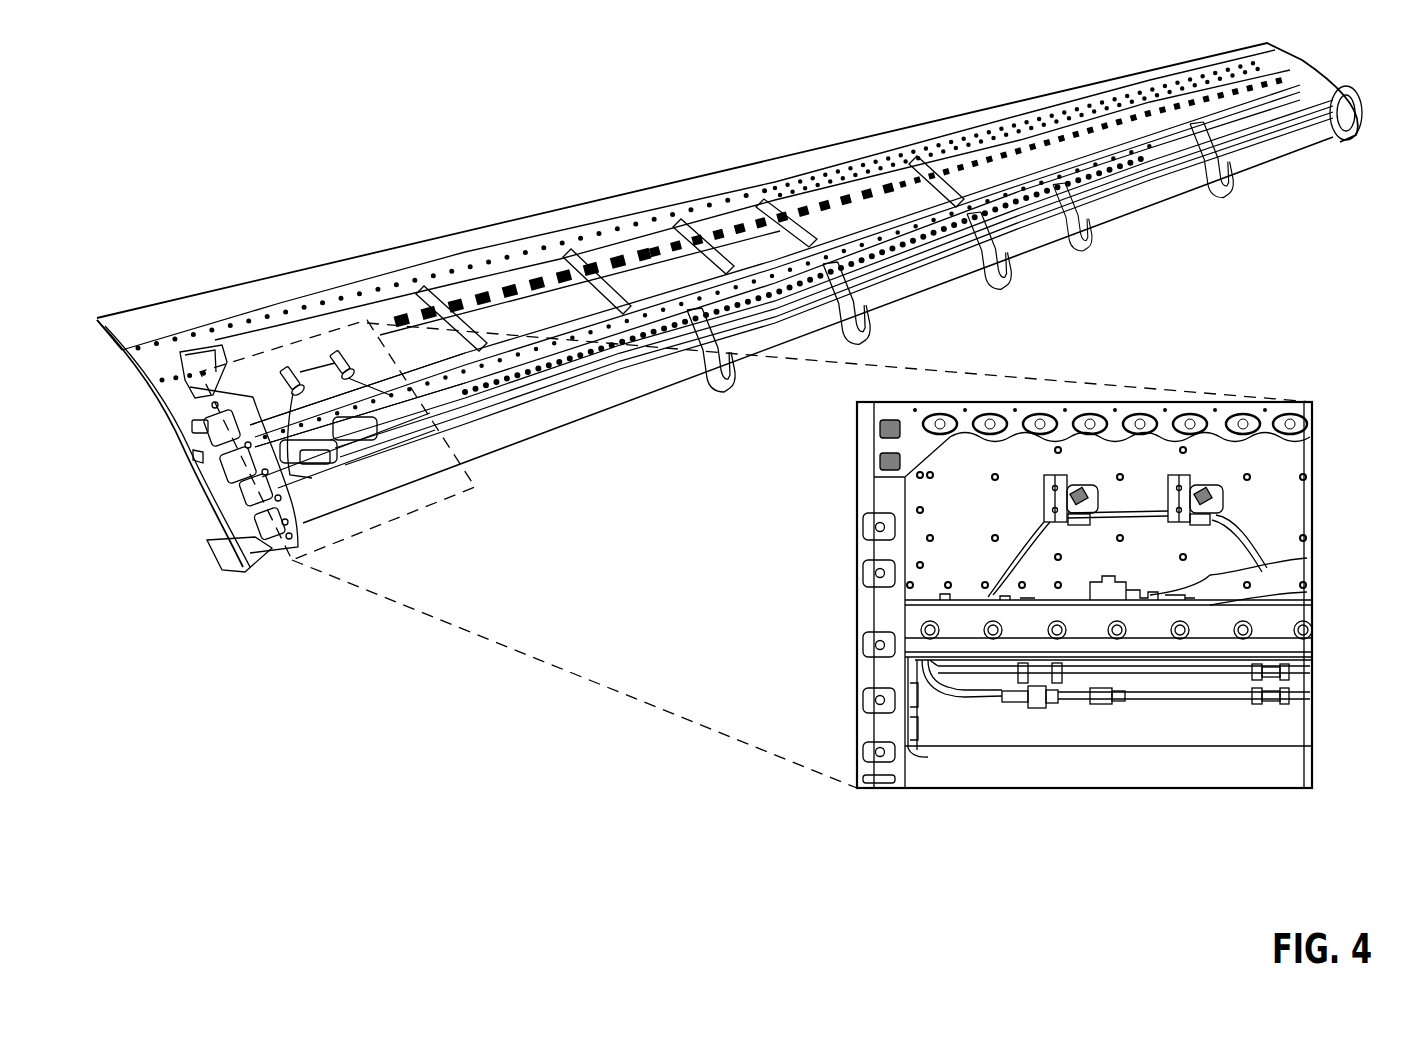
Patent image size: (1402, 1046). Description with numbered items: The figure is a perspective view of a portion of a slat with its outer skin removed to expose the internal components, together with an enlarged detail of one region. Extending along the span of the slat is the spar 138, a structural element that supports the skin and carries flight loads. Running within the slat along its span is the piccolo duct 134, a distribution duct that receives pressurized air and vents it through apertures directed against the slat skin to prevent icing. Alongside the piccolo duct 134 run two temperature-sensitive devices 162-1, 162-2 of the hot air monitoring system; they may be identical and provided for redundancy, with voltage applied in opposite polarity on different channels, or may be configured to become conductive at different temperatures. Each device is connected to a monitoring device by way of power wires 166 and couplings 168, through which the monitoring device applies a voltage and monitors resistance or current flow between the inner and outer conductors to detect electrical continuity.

The piccolo duct 134 is at (357, 497).
The spar 138 is at (345, 398).
The temperature-sensitive device 162-1 is at (1195, 677).
The temperature-sensitive device 162-2 is at (1197, 700).
The power wires 166 is at (975, 702).
The couplings 168 is at (1045, 700).